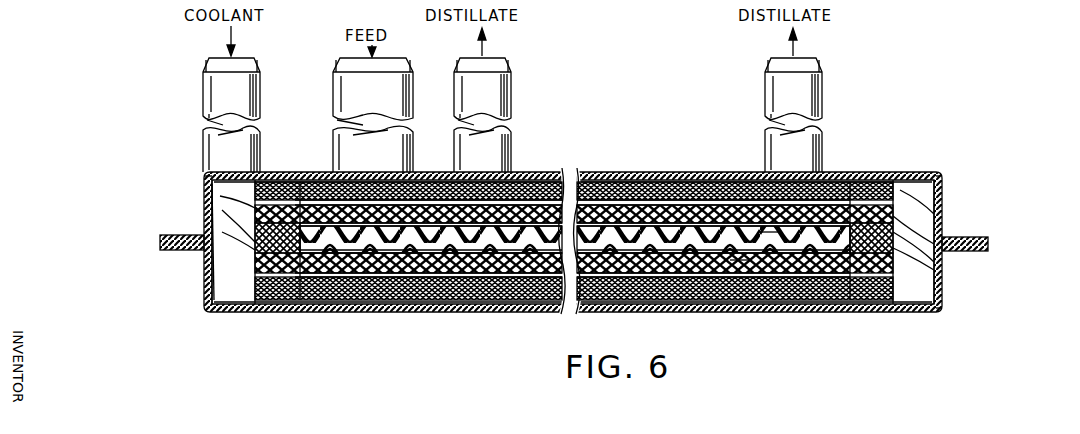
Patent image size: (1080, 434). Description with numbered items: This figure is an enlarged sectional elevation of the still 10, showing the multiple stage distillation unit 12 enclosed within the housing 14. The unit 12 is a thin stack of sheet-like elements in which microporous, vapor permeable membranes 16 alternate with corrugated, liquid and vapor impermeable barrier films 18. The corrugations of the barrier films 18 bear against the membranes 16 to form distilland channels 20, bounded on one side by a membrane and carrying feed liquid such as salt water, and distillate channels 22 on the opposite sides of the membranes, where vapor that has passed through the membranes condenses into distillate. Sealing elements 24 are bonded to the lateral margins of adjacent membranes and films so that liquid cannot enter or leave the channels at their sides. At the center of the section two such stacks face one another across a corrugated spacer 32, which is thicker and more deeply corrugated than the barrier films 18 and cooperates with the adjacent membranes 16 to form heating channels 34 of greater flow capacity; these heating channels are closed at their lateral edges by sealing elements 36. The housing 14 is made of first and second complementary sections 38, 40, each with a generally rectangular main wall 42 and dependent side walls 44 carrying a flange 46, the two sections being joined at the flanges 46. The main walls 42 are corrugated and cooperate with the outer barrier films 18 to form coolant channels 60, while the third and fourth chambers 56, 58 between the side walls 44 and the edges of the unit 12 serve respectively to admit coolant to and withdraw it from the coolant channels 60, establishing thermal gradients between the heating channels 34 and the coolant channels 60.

The still 10 is at (528, 166).
The multiple stage distillation unit 12 is at (250, 270).
The housing 14 is at (943, 174).
The microporous vapor permeable membranes 16 is at (392, 262).
The barrier films 18 is at (362, 272).
The distilland channels 20 is at (416, 264).
The distillate channels 22 is at (466, 272).
The sealing elements 24 is at (255, 198).
The corrugated spacer 32 is at (770, 236).
The heating channels 34 is at (740, 262).
The sealing elements 36 is at (255, 230).
The first housing section 38 is at (205, 178).
The second housing section 40 is at (942, 306).
The main wall 42 is at (328, 304).
The dependent side walls 44 is at (204, 272).
The flange 46 is at (165, 240).
The third chamber 56 is at (222, 258).
The fourth chamber 58 is at (938, 288).
The coolant channels 60 is at (310, 302).